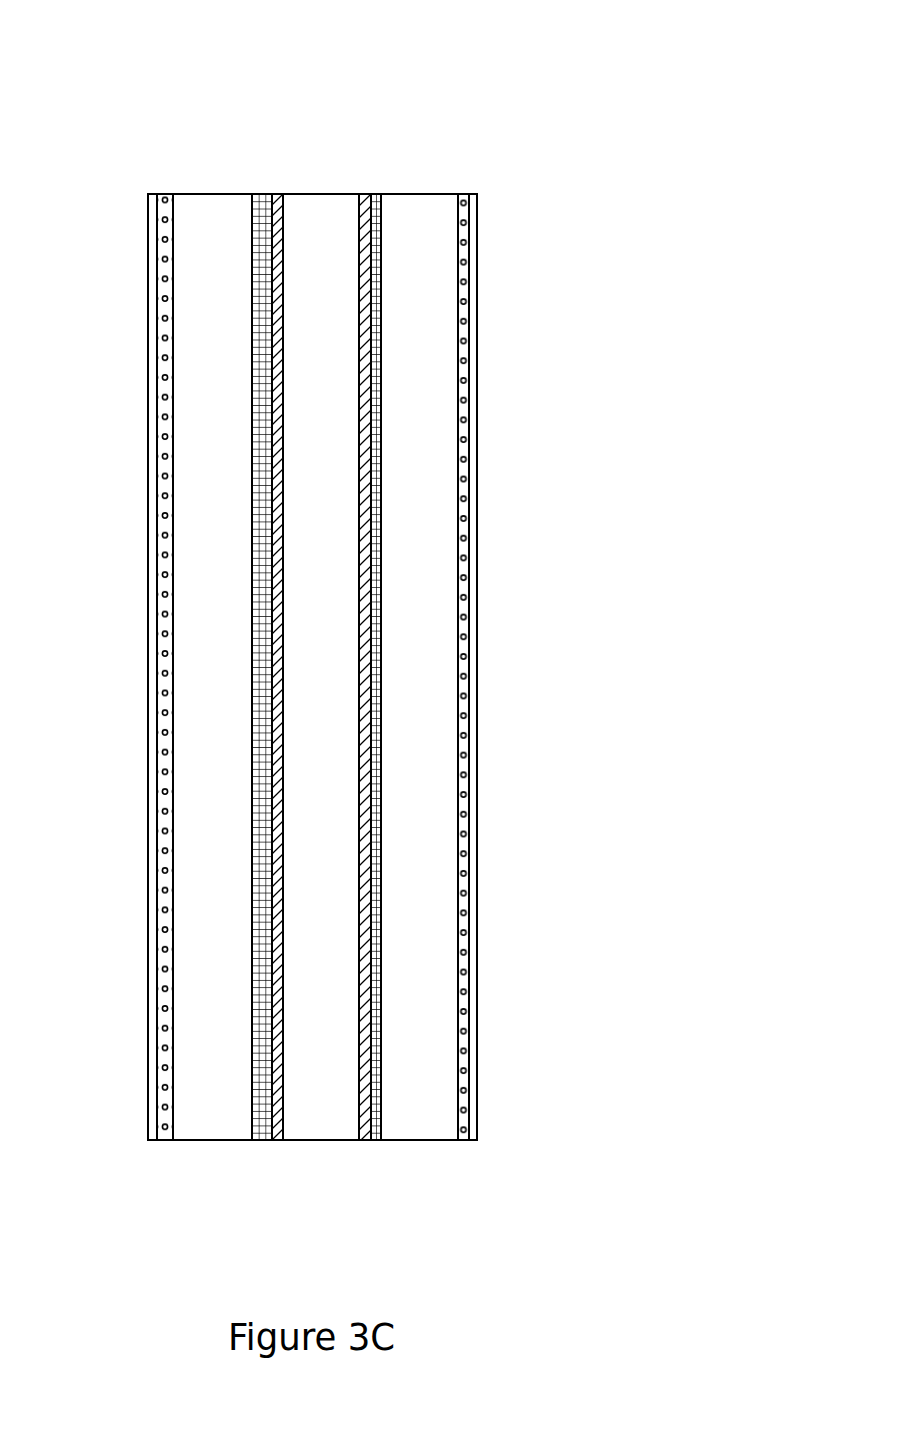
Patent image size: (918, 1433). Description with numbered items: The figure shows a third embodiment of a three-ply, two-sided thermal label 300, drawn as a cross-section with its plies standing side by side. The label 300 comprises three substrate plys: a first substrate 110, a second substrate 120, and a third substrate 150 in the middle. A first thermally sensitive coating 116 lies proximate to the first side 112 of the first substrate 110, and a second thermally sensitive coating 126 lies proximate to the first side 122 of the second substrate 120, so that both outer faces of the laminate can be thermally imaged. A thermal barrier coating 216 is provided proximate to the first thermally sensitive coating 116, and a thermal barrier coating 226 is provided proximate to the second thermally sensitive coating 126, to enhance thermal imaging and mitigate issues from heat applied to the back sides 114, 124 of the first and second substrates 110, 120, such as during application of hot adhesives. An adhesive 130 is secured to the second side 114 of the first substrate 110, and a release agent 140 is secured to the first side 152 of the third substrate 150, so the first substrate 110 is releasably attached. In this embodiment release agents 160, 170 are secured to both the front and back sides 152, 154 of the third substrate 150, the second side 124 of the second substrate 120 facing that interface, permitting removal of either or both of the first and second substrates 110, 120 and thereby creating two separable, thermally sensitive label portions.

The three-ply, two-sided thermal label 300 is at (455, 58).
The first substrate 110 is at (235, 246).
The first side of first substrate 112 is at (168, 178).
The second side of first substrate 114 is at (248, 175).
The first thermally sensitive coating 116 is at (143, 233).
The second substrate 120 is at (441, 246).
The first side of second substrate 122 is at (468, 176).
The second side of second substrate 124 is at (384, 172).
The second thermally sensitive coating 126 is at (481, 233).
The adhesive 130 is at (262, 1143).
The release agent 140 is at (277, 1143).
The third substrate 150 is at (345, 246).
The first side of third substrate 152 is at (277, 168).
The second side of third substrate 154 is at (352, 170).
The release agent 160 is at (376, 1143).
The release agent 170 is at (364, 1143).
The thermal barrier coating 216 is at (163, 1143).
The thermal barrier coating 226 is at (463, 1143).